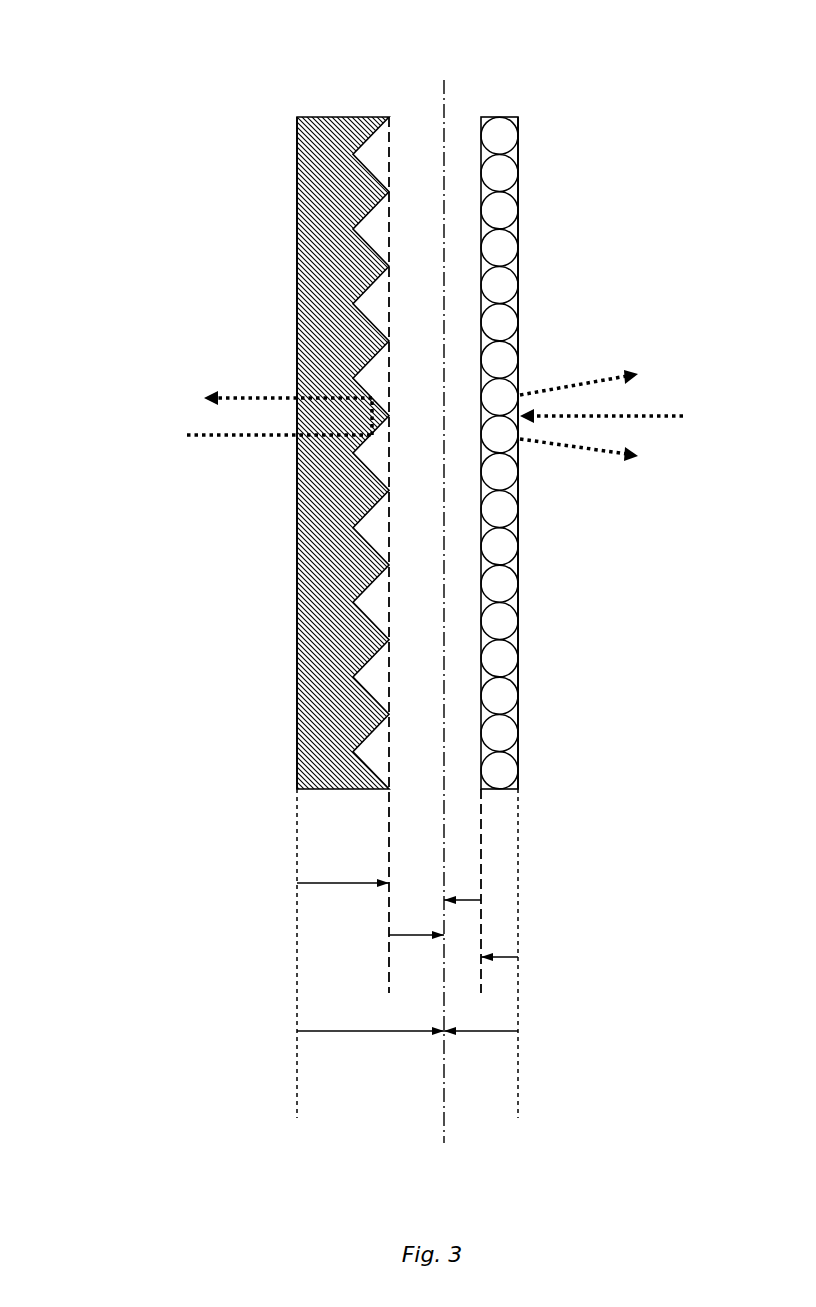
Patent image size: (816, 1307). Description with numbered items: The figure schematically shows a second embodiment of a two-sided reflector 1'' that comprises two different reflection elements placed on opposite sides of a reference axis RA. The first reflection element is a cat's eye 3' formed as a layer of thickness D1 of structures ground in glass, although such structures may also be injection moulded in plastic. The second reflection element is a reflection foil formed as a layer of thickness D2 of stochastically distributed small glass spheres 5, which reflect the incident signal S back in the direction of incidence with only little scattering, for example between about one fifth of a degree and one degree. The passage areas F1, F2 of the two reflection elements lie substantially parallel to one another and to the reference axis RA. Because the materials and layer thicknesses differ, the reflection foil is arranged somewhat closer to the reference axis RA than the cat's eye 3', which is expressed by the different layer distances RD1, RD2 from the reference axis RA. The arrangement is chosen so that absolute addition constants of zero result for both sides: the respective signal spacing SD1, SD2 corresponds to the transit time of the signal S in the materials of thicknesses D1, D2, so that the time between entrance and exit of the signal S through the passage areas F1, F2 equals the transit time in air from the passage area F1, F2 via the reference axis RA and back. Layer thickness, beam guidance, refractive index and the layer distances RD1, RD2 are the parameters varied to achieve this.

The two-sided reflector 1'' is at (139, 27).
The cat's eye 3' is at (276, 555).
The small glass spheres 5 is at (507, 207).
The passage area F1 is at (297, 675).
The passage area F2 is at (518, 675).
The reference axis RA is at (444, 586).
The signal S is at (438, 422).
The layer thickness D1 is at (343, 899).
The layer thickness D2 is at (523, 959).
The layer distance RD1 is at (416, 953).
The layer distance RD2 is at (492, 903).
The signal spacing SD1 is at (370, 953).
The signal spacing SD2 is at (481, 953).